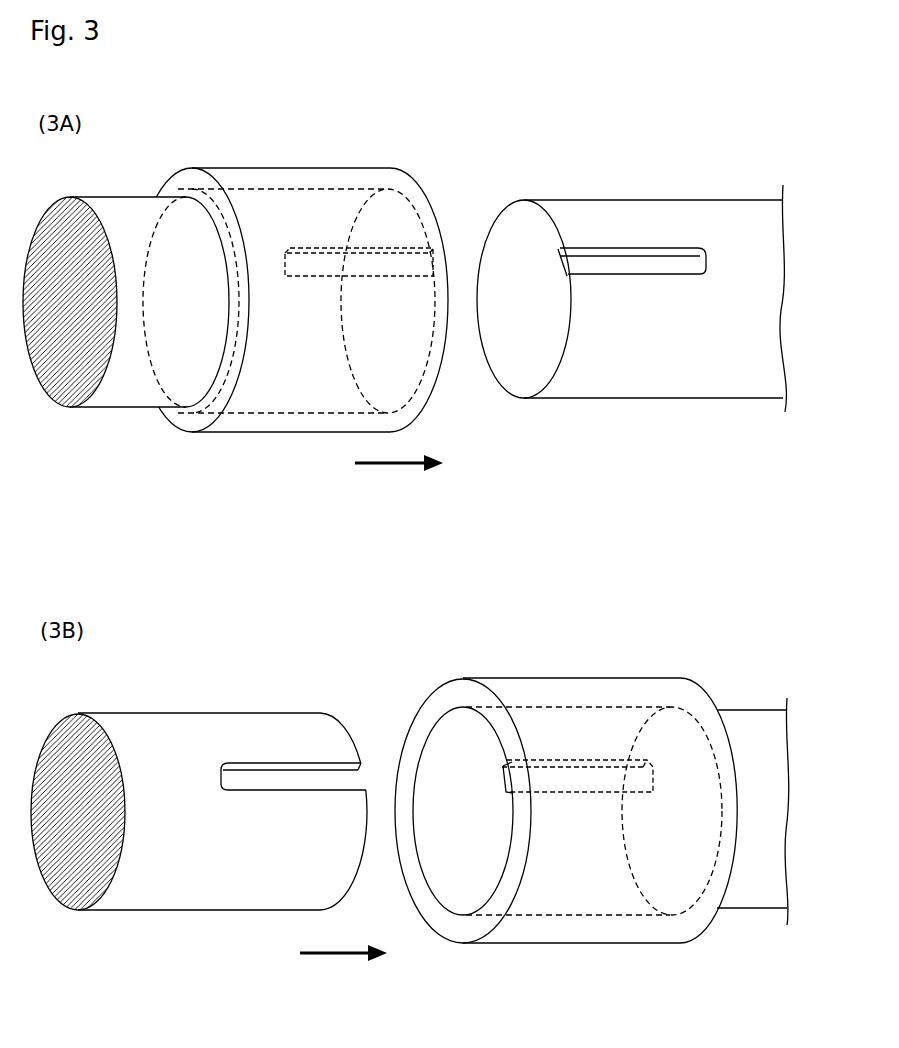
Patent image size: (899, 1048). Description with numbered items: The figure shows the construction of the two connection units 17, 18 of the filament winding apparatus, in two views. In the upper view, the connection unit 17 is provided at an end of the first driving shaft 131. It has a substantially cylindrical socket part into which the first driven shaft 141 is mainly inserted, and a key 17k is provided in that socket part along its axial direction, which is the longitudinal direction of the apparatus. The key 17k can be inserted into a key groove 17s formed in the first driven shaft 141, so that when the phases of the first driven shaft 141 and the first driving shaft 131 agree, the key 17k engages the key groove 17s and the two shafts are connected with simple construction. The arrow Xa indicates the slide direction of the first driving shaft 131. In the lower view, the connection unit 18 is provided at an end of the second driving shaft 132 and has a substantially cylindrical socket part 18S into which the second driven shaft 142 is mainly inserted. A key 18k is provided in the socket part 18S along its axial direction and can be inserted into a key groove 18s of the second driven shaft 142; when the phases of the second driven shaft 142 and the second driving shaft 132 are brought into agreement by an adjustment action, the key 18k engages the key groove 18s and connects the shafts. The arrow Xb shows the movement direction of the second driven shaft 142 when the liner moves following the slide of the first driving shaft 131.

The first driving shaft 131 is at (117, 407).
The second driving shaft 132 is at (752, 905).
The first driven shaft 141 is at (673, 395).
The second driven shaft 142 is at (210, 907).
The connection unit 17 is at (490, 130).
The key 17k is at (341, 248).
The key groove 17s is at (630, 250).
The connection unit 18 is at (380, 630).
The socket part 18S is at (590, 940).
The key 18k is at (573, 760).
The key groove 18s is at (283, 768).